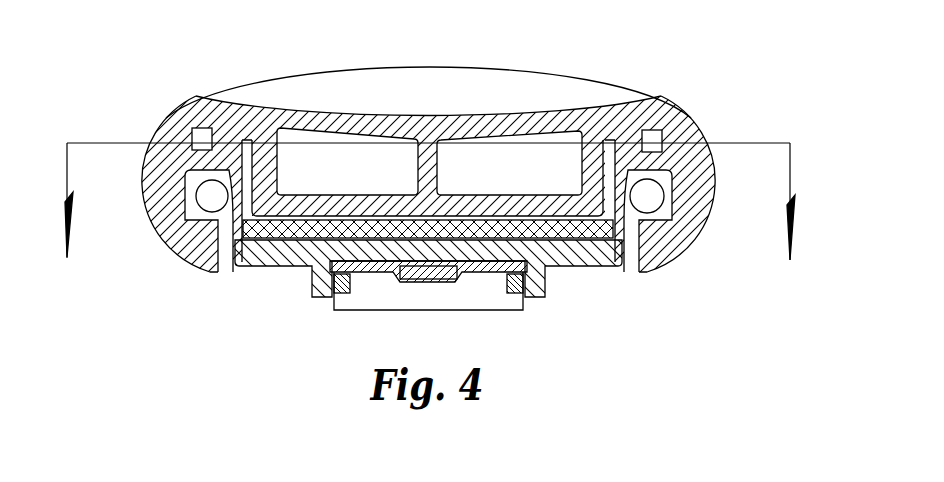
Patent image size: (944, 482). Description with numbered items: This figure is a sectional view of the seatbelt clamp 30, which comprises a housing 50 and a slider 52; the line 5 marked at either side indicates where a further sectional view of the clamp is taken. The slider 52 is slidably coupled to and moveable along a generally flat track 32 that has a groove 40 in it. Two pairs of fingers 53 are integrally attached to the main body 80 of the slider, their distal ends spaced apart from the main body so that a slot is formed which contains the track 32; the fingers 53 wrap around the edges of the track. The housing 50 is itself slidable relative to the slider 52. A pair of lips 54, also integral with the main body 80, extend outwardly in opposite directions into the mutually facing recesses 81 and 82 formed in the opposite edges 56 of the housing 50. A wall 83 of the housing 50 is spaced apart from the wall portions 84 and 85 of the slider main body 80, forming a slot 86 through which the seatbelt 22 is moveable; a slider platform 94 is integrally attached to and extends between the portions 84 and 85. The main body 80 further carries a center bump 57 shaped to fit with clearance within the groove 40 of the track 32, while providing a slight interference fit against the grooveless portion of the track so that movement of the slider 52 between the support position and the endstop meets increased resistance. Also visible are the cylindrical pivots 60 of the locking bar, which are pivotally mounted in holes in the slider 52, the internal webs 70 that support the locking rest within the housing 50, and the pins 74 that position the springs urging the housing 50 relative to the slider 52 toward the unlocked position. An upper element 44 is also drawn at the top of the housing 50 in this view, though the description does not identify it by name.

The section line 5— 5 is at (428, 225).
The seatbelt 22 is at (290, 250).
The clamp 30 is at (178, 112).
The track 32 is at (345, 262).
The groove 40 is at (437, 310).
The lens 44 is at (455, 90).
The housing 50 is at (221, 99).
The slider 52 is at (410, 250).
The fingers 53 is at (338, 288).
The lips 54 is at (196, 128).
The edges 56 is at (165, 148).
The center bump 57 is at (483, 272).
The cylindrical pivots 60 is at (600, 147).
The internal webs 70 is at (422, 140).
The pins 74 is at (210, 190).
The main body 80 is at (363, 247).
The recess 81 is at (190, 135).
The recess 82 is at (670, 143).
The wall 83 is at (328, 207).
The wall portion 84 is at (242, 257).
The wall portion 85 is at (623, 260).
The slot 86 is at (298, 262).
The slider platform 94 is at (458, 215).